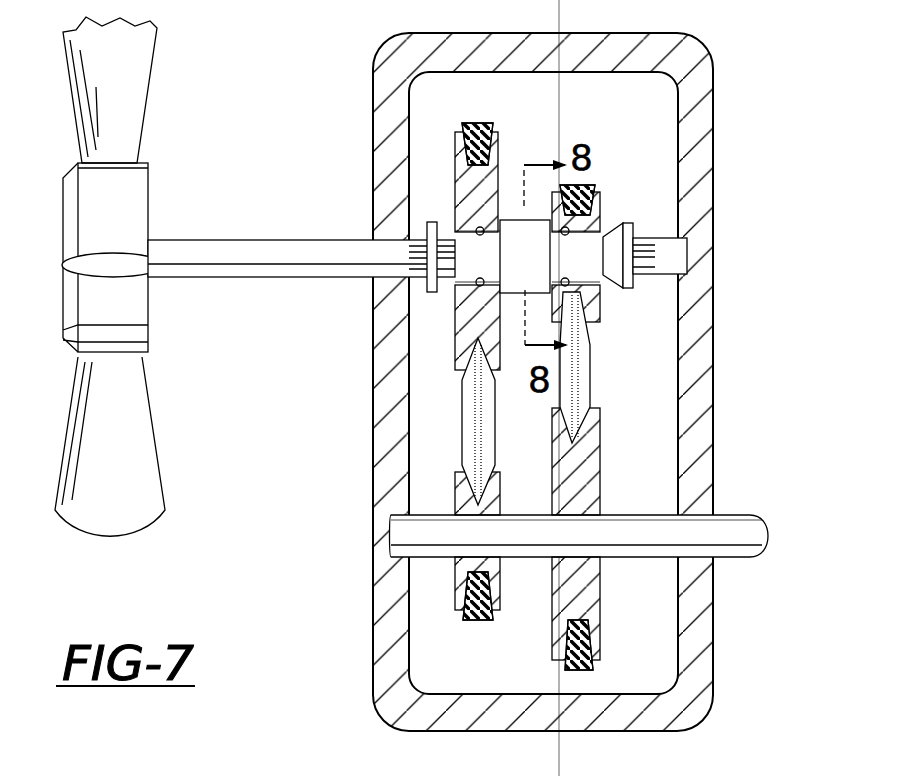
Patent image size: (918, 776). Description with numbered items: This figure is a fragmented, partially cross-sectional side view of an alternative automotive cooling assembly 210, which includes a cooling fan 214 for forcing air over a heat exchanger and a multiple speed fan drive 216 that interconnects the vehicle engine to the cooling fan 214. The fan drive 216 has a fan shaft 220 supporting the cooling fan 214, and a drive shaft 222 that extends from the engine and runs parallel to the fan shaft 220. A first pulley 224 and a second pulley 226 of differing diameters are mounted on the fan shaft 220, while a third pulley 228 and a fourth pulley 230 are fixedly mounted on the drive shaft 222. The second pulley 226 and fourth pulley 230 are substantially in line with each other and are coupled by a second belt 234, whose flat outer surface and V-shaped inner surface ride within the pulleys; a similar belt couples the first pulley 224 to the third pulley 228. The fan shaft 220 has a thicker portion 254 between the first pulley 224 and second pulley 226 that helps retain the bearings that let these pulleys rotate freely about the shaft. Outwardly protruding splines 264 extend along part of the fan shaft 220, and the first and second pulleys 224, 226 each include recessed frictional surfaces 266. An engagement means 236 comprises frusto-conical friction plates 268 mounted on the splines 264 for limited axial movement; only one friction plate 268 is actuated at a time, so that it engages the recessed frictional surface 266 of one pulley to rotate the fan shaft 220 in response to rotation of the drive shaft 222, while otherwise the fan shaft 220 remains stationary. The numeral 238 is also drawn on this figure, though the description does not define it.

The automotive cooling assembly 210 is at (300, 430).
The cooling fan 214 is at (145, 62).
The multiple speed fan drive 216 is at (735, 128).
The fan shaft 220 is at (275, 247).
The drive shaft 222 is at (738, 525).
The first pulley 224 is at (500, 140).
The second pulley 226 is at (600, 192).
The third pulley 228 is at (463, 568).
The fourth pulley 230 is at (560, 617).
The second belt 234 is at (462, 395).
The engagement means 236 is at (432, 178).
The housing wall 238 is at (705, 395).
The thicker portion 254 is at (525, 256).
The splines 264 is at (640, 300).
The recessed frictional surfaces 266 is at (457, 235).
The friction plates 268 is at (447, 278).